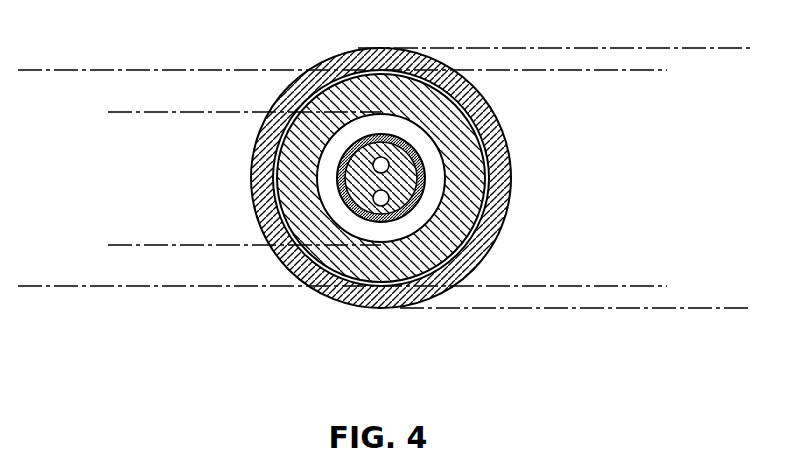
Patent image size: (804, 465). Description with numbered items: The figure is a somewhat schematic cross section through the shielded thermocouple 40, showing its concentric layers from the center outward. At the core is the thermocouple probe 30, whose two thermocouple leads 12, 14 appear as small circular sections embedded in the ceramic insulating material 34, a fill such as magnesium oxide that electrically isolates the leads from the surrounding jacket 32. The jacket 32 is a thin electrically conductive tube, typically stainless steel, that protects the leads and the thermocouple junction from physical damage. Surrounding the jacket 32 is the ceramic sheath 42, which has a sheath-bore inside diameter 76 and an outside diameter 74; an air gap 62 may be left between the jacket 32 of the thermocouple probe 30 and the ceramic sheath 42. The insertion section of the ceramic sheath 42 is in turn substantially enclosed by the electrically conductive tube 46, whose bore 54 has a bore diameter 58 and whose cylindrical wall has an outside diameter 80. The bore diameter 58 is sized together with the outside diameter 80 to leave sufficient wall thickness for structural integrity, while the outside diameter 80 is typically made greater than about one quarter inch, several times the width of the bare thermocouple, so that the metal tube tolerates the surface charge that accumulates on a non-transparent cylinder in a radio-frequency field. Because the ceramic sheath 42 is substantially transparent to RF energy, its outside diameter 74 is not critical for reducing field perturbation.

The thermocouple lead 12 is at (373, 165).
The thermocouple lead 14 is at (374, 198).
The thermocouple probe 30 is at (352, 140).
The jacket 32 is at (372, 213).
The ceramic insulating material 34 is at (400, 213).
The shielded thermocouple 40 is at (280, 298).
The ceramic sheath 42 is at (452, 234).
The electrically conductive tube 46 is at (484, 258).
The bore 54 is at (480, 119).
The bore diameter 58 is at (640, 84).
The air gap 62 is at (435, 179).
The outside diameter of the ceramic sheath 74 is at (34, 84).
The sheath-bore inside diameter 76 is at (127, 126).
The outside diameter 80 is at (738, 62).